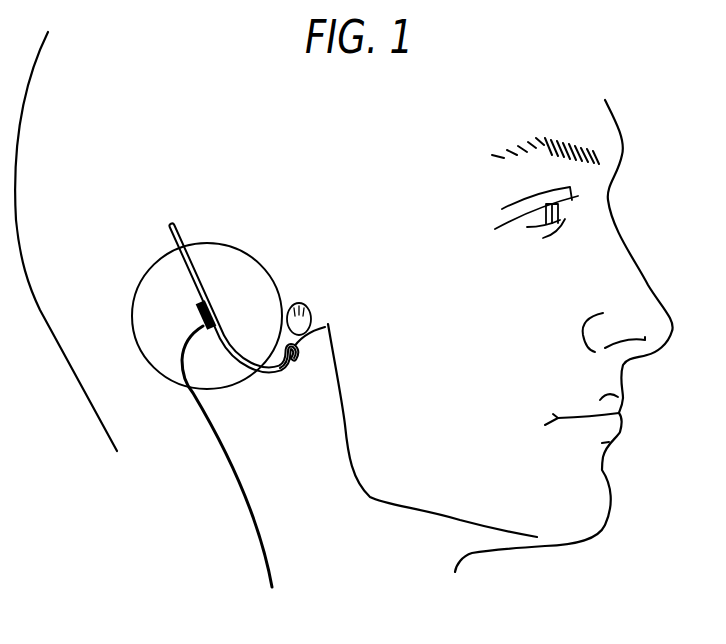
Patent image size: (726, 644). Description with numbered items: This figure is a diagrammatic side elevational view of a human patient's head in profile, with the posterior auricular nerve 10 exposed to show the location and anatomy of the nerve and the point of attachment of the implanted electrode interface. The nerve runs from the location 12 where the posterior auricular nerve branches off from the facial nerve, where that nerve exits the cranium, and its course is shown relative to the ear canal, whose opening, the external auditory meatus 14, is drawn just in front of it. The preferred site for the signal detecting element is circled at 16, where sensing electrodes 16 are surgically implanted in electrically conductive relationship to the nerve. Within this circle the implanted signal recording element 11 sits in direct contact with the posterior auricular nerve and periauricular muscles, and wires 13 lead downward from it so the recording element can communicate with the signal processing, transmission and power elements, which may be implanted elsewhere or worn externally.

The posterior auricular nerve 10 is at (235, 363).
The implanted signal recording element 11 is at (203, 316).
The location where the posterior auricular nerve branches off from the facial nerve 12 is at (293, 360).
The wires 13 is at (247, 483).
The external auditory meatus 14 is at (300, 320).
The sensing electrodes 16 is at (149, 270).